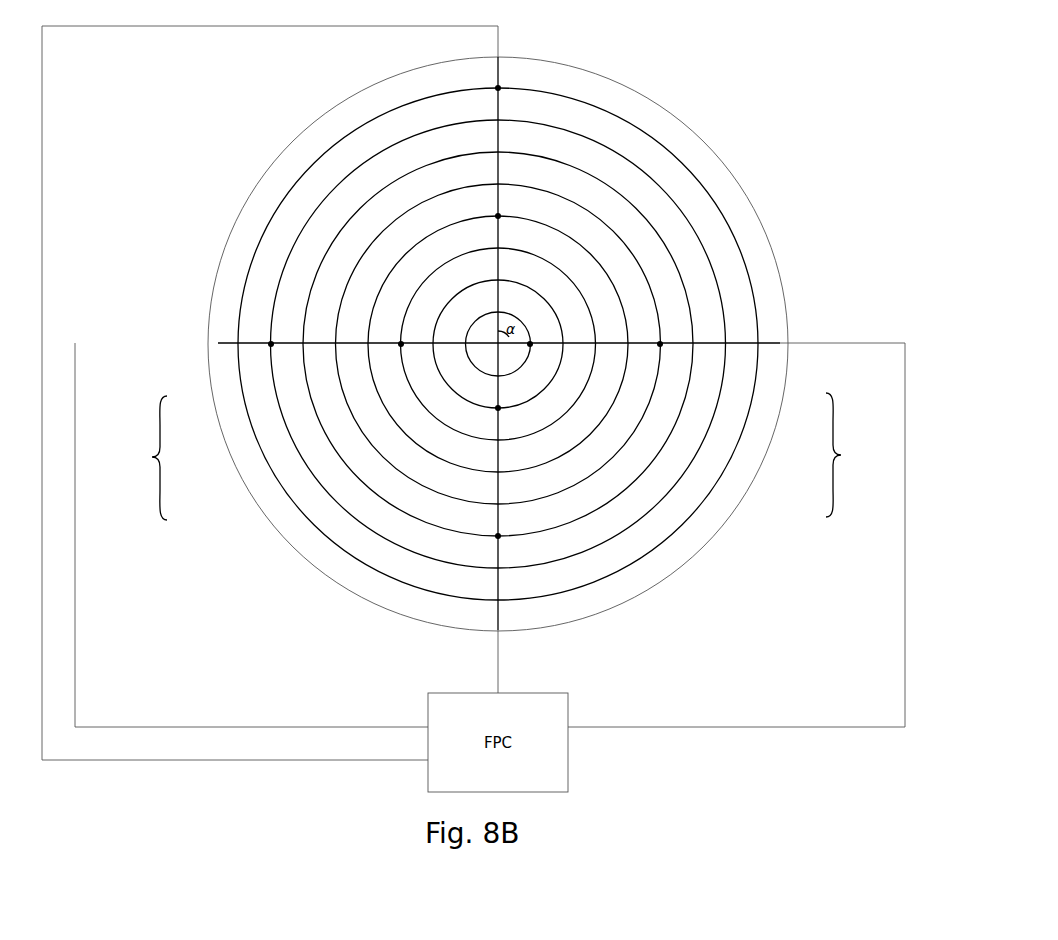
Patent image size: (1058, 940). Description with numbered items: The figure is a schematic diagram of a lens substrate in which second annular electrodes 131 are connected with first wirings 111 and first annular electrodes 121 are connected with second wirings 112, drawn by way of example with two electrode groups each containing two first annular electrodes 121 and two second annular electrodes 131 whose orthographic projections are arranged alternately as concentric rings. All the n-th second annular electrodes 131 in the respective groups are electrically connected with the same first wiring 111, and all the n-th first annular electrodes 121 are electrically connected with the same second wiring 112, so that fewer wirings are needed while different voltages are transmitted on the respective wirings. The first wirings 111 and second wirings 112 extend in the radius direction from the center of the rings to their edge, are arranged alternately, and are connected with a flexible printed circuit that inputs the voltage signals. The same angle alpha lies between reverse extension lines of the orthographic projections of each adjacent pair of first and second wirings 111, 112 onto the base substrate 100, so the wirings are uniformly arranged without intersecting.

The base substrate 100 is at (602, 82).
The first wiring 111 is at (498, 68).
The second wiring 112 is at (227, 343).
The first annular electrode 121 is at (466, 352).
The second annular electrode 131 is at (443, 380).